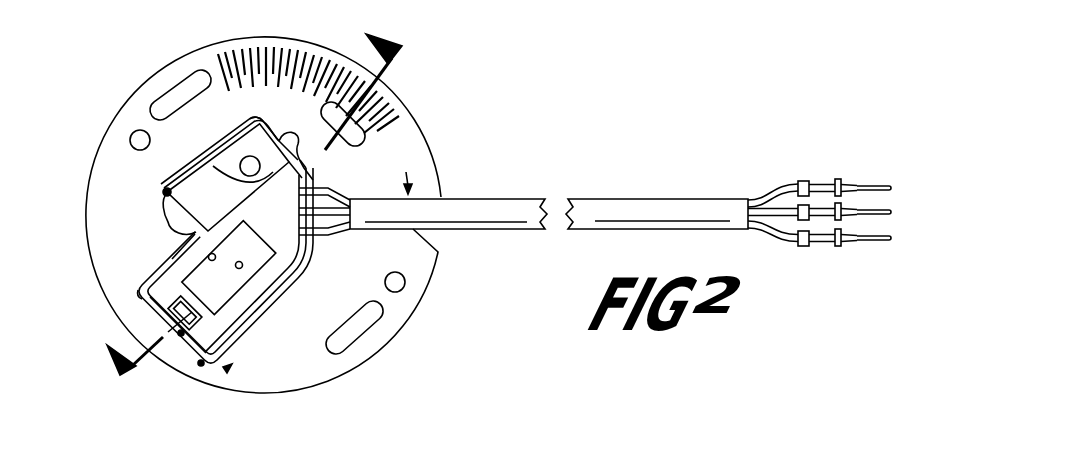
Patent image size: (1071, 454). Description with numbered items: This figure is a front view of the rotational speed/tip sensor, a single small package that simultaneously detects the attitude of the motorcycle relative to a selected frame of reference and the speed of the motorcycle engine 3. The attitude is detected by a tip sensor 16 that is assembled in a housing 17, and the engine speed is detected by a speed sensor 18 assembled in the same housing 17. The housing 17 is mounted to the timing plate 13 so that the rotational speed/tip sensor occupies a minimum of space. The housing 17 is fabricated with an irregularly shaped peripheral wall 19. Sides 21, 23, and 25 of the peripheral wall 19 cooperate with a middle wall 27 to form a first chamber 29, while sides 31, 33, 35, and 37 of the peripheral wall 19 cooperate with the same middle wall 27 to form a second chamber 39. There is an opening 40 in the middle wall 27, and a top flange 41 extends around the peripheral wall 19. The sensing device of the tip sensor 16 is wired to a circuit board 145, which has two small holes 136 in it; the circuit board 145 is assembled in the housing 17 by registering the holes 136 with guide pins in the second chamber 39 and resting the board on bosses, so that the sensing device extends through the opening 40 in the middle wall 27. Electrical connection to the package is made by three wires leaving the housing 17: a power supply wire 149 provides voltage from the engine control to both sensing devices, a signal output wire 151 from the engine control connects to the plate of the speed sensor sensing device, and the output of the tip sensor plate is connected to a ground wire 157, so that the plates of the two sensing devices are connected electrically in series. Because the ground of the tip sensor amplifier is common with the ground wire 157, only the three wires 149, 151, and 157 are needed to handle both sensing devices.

The motorcycle engine 3 is at (264, 220).
The timing plate 13 is at (380, 348).
The tip sensor 16 is at (164, 192).
The housing 17 is at (228, 369).
The speed sensor 18 is at (181, 336).
The peripheral wall 19 is at (201, 366).
The side of peripheral wall 21 is at (172, 216).
The side of peripheral wall 23 is at (178, 174).
The side of peripheral wall 25 is at (300, 132).
The middle wall 27 is at (187, 240).
The first chamber 29 is at (253, 123).
The side of peripheral wall 31 is at (157, 317).
The side of peripheral wall 33 is at (166, 262).
The side of peripheral wall 35 is at (245, 336).
The side of peripheral wall 37 is at (314, 173).
The second chamber 39 is at (150, 298).
The opening 40 is at (217, 178).
The top flange 41 is at (262, 313).
The holes 136 is at (243, 267).
The circuit board 145 is at (257, 256).
The power supply wire 149 is at (872, 184).
The signal output wire 151 is at (892, 211).
The ground wire 157 is at (886, 243).